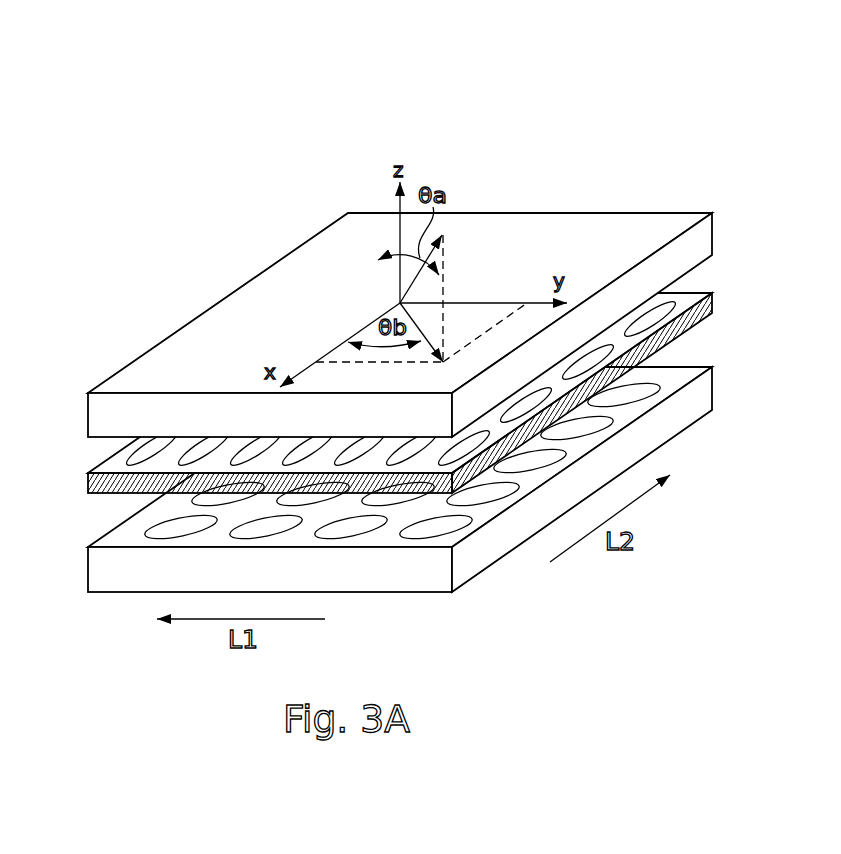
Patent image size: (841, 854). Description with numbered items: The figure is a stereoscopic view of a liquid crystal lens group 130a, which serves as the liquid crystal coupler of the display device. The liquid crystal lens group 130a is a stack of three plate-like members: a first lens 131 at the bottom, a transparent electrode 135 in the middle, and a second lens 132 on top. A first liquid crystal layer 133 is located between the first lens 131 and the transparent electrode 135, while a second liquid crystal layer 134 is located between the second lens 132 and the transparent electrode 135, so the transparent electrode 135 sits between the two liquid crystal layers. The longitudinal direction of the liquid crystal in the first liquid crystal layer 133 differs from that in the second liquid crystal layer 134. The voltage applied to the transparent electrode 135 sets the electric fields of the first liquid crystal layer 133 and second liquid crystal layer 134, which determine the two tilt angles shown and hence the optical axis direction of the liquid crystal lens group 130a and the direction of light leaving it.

The liquid crystal lens group 130a is at (256, 79).
The first lens 131 is at (698, 400).
The second lens 132 is at (708, 233).
The first liquid crystal layer 133 is at (657, 385).
The second liquid crystal layer 134 is at (668, 305).
The transparent electrode 135 is at (710, 305).